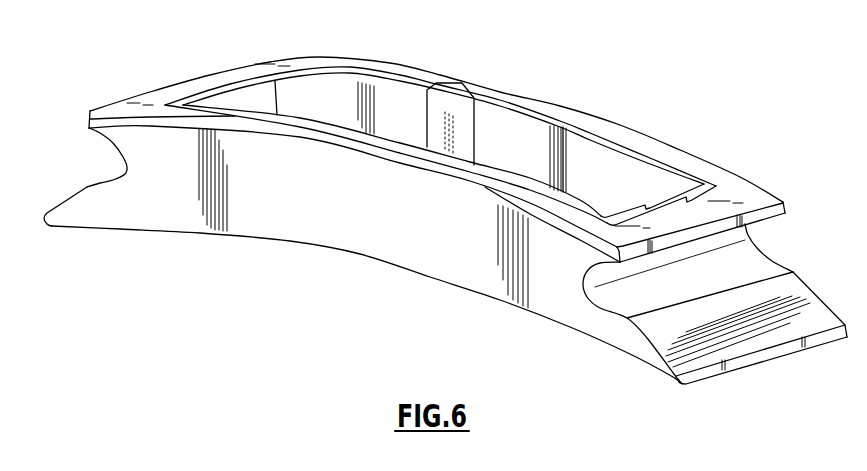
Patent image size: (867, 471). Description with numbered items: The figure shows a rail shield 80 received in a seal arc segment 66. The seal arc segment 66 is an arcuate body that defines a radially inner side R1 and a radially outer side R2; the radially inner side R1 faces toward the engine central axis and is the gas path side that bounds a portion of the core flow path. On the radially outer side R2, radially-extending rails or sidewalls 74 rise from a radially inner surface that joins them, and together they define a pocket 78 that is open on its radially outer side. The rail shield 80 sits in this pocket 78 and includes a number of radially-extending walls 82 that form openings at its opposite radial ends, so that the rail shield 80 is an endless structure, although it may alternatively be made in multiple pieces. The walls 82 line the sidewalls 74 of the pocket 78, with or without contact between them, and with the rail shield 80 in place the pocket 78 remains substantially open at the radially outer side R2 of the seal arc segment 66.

The seal arc segment 66 is at (161, 72).
The sidewalls 74 is at (597, 132).
The pocket 78 is at (341, 98).
The rail shield 80 is at (535, 105).
The radially-extending walls 82 is at (403, 109).
The radially inner side R1 is at (437, 286).
The radially outer side R2 is at (688, 140).